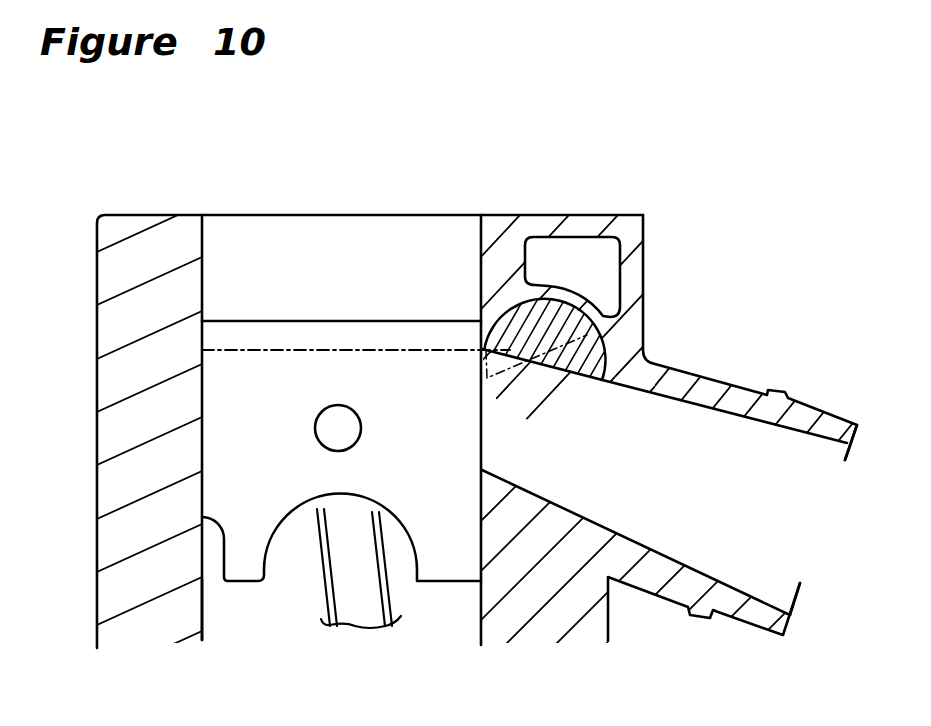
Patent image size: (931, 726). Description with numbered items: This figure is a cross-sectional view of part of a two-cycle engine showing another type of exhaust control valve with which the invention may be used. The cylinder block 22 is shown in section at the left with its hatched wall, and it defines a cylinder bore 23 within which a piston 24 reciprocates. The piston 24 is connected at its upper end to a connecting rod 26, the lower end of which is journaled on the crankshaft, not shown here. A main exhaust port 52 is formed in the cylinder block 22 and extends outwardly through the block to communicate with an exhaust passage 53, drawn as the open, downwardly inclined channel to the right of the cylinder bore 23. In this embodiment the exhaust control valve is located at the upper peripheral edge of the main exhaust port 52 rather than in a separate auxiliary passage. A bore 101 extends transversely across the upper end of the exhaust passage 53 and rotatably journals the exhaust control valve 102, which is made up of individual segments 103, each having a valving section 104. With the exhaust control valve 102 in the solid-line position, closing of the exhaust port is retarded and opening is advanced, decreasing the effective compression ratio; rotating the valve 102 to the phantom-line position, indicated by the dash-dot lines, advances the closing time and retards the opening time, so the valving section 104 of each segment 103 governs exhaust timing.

The cylinder block 22 is at (96, 602).
The cylinder bore 23 is at (202, 617).
The piston 24 is at (445, 572).
The connecting rod 26 is at (330, 612).
The main exhaust port 52 is at (483, 471).
The exhaust passage 53 is at (757, 506).
The bore 101 is at (605, 358).
The exhaust control valve 102 is at (580, 285).
The segment 103 is at (527, 361).
The valving section 104 is at (501, 318).